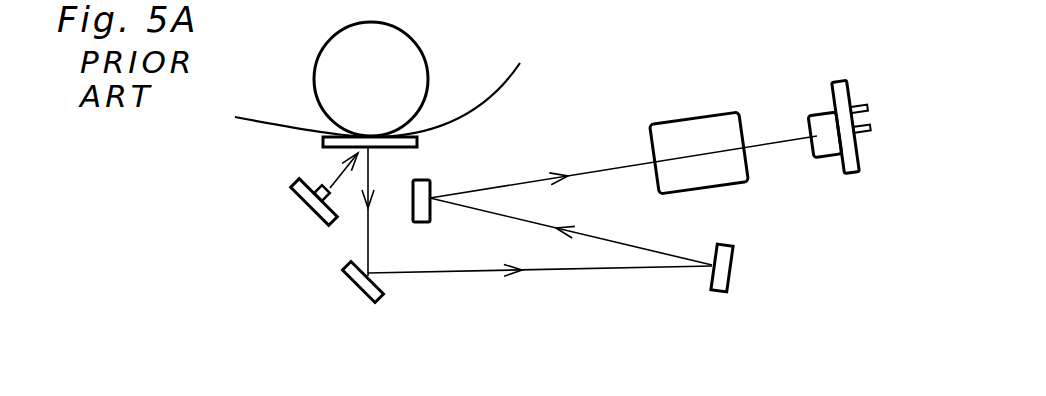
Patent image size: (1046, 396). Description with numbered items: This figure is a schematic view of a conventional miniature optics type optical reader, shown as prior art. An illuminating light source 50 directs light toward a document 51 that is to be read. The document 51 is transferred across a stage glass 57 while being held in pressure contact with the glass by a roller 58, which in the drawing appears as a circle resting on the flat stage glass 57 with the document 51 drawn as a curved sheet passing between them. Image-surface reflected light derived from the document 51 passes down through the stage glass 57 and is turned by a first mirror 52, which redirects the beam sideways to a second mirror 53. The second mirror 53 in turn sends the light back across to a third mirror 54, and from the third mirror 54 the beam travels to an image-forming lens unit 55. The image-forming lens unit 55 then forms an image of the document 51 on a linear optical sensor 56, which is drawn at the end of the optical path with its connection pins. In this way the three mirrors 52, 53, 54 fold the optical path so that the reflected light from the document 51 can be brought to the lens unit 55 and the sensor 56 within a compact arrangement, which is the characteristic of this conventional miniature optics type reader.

The illuminating light source 50 is at (297, 202).
The document 51 is at (508, 80).
The first mirror 52 is at (352, 283).
The second mirror 53 is at (736, 263).
The third mirror 54 is at (430, 192).
The image-forming lens unit 55 is at (718, 113).
The linear optical sensor 56 is at (840, 81).
The stage glass 57 is at (320, 142).
The roller 58 is at (328, 55).